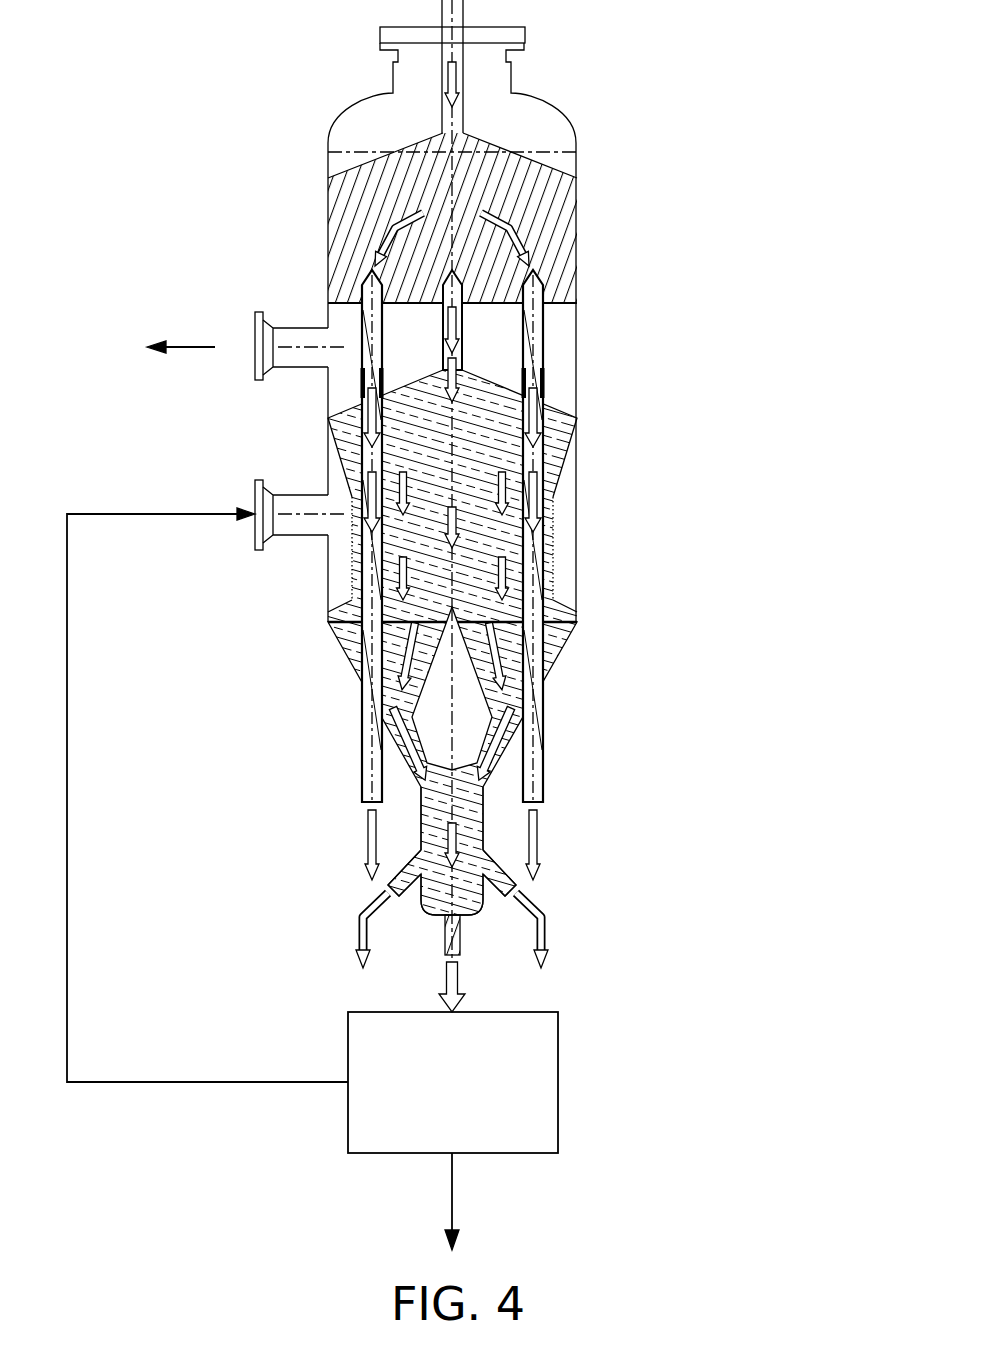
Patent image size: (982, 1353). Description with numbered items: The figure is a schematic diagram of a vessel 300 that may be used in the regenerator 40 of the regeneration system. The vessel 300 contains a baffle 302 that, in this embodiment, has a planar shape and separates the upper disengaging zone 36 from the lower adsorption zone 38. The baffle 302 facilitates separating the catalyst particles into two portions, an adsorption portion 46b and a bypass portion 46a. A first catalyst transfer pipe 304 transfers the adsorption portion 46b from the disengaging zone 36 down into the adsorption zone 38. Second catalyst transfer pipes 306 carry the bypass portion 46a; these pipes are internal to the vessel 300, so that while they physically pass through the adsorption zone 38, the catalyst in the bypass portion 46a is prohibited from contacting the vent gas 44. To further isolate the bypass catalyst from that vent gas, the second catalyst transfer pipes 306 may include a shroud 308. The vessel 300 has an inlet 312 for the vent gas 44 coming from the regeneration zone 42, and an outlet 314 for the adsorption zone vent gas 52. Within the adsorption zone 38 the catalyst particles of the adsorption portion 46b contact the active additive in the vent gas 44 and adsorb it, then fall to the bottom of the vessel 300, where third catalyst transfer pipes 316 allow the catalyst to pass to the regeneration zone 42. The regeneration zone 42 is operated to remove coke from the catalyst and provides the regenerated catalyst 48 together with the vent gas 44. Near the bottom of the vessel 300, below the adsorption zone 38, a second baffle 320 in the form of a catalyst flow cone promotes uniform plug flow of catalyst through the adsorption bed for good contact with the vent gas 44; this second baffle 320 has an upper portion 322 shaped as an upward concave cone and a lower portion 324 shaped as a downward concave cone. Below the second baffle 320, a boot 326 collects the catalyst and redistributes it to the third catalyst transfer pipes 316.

The regenerator 40 is at (745, 92).
The disengaging zone 36 is at (503, 173).
The adsorption zone 38 is at (480, 547).
The regeneration zone 42 is at (548, 1012).
The vent gas 44 is at (67, 887).
The bypass portion 46a is at (366, 440).
The adsorption portion 46b is at (542, 368).
The regenerated catalyst 48 is at (453, 1200).
The adsorption zone vent gas 52 is at (215, 345).
The vessel 300 is at (578, 241).
The baffle 302 is at (415, 303).
The first catalyst transfer pipe 304 is at (462, 347).
The second catalyst transfer pipes 306 is at (548, 308).
The shroud 308 is at (362, 386).
The inlet 312 is at (296, 537).
The outlet 314 is at (298, 326).
The third catalyst transfer pipes 316 is at (510, 890).
The second baffle 320 is at (433, 695).
The upper portion 322 is at (477, 660).
The lower portion 324 is at (472, 733).
The boot 326 is at (477, 830).